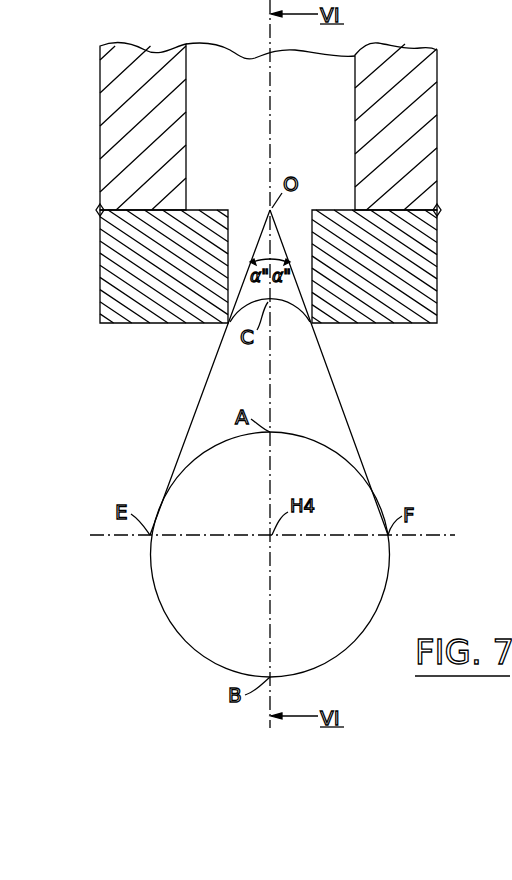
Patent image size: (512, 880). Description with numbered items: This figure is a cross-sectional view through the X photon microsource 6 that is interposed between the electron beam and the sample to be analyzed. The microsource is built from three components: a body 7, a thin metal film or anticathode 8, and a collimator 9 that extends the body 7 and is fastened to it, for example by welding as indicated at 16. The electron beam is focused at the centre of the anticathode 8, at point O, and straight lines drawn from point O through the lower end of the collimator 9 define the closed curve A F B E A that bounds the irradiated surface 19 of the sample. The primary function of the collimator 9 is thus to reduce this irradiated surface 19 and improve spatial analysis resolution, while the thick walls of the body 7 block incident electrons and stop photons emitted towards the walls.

The X photon microsource 6 is at (94, 120).
The body 7 is at (410, 112).
The anticathode 8 is at (268, 208).
The collimator 9 is at (125, 262).
The weld 16 is at (99, 210).
The irradiated surface 19 is at (202, 602).